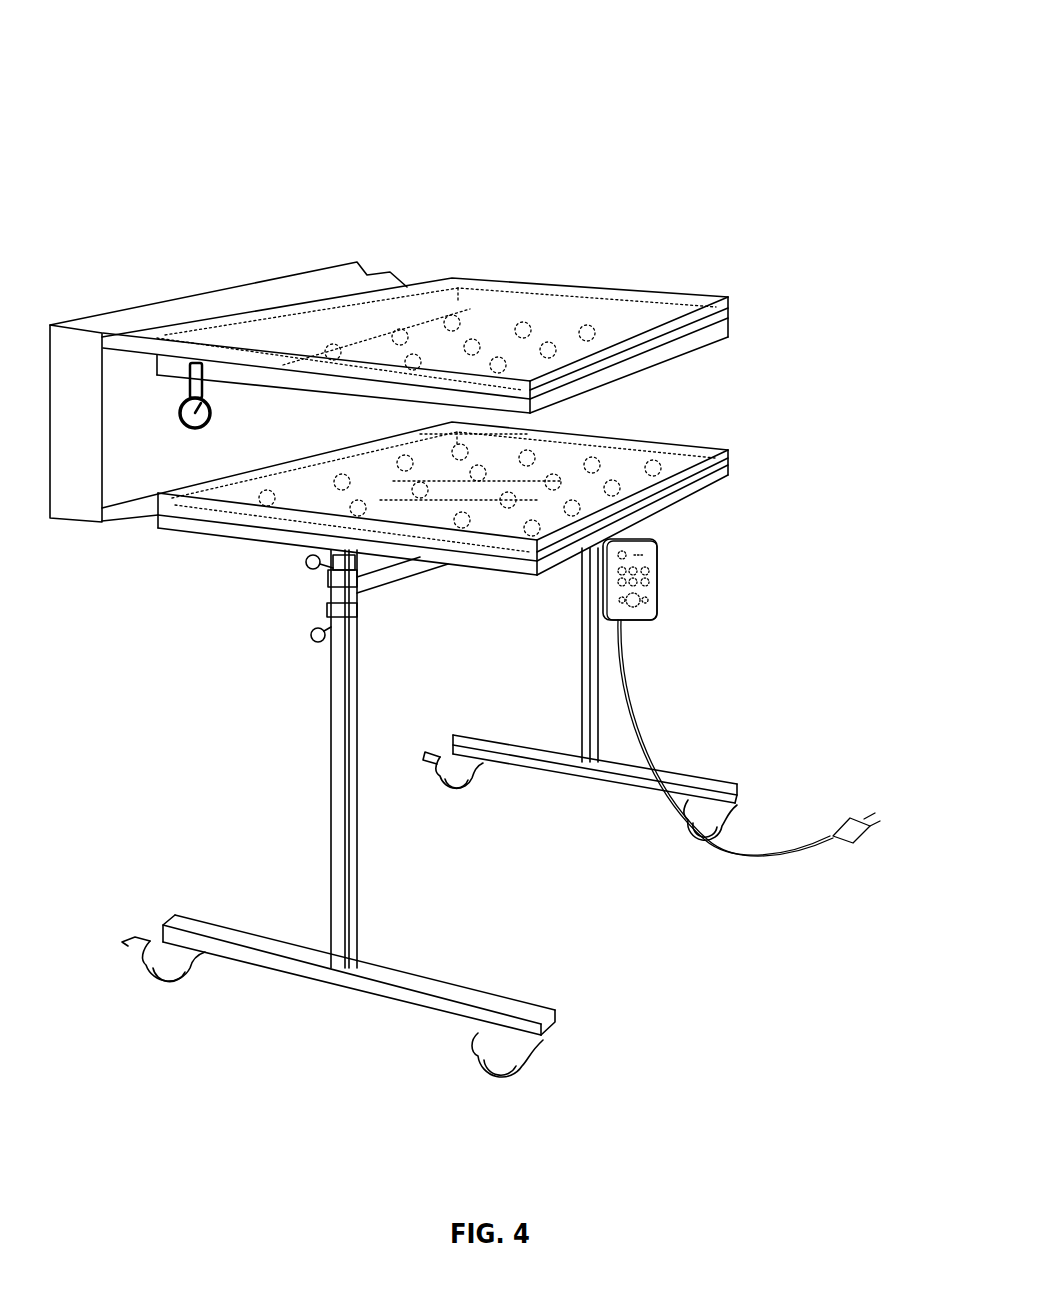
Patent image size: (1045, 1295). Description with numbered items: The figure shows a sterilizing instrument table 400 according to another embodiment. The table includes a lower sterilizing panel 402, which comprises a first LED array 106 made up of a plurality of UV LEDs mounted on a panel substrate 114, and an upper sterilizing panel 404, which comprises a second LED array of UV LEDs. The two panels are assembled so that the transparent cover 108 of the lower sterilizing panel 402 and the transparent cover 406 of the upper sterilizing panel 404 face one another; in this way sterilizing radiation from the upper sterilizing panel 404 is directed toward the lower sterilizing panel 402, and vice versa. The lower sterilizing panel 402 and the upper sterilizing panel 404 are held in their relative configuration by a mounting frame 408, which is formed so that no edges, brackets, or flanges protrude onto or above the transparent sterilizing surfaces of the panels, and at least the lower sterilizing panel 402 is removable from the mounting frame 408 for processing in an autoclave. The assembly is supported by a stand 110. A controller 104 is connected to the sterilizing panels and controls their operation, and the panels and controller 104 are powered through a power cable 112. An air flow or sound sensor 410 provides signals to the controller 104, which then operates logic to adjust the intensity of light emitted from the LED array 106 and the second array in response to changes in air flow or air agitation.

The sterilizing instrument table 400 is at (731, 72).
The upper sterilizing panel 404 is at (718, 312).
The transparent cover 406 is at (666, 357).
The air flow or sound sensor 410 is at (180, 415).
The mounting frame 408 is at (147, 513).
The lower sterilizing panel 402 is at (713, 460).
The transparent cover 108 is at (642, 473).
The LED array 106 is at (565, 455).
The panel substrate 114 is at (520, 567).
The stand 110 is at (343, 710).
The controller 104 is at (657, 603).
The power cable 112 is at (793, 850).